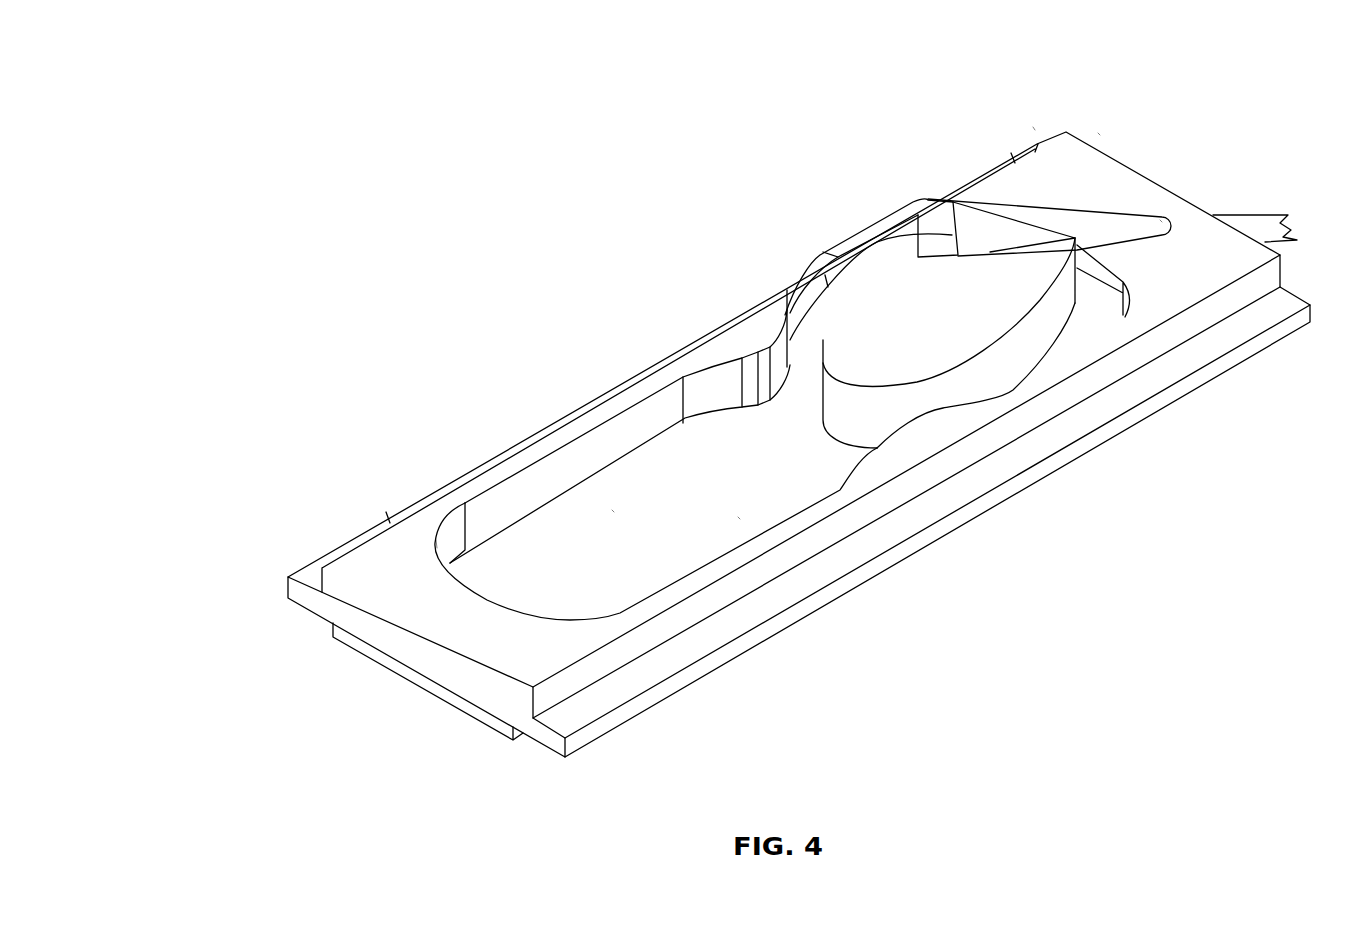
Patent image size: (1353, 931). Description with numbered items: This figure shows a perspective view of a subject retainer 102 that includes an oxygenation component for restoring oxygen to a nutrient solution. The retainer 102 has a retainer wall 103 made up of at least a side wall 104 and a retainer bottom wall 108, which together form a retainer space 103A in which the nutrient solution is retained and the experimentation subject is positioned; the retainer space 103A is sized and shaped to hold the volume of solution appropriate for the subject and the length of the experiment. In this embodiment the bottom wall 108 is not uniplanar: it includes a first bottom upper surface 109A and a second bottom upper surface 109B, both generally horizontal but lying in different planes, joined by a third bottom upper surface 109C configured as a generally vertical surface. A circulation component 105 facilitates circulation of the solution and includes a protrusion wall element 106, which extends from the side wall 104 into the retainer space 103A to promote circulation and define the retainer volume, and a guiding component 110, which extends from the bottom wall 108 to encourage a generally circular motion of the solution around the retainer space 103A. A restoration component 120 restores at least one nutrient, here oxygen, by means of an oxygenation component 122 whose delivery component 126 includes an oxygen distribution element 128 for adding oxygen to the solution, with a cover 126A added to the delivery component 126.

The retainer 102 is at (287, 485).
The retainer wall 103 is at (723, 197).
The retainer space 103A is at (738, 517).
The side wall 104 is at (598, 390).
The circulation component 105 is at (833, 203).
The protrusion wall element 106 is at (737, 345).
The retainer bottom wall 108 is at (542, 553).
The first bottom upper surface 109A is at (1098, 295).
The second bottom upper surface 109B is at (613, 510).
The third bottom upper surface 109C is at (805, 360).
The guiding component 110 is at (948, 347).
The restoration component 120 is at (1033, 127).
The oxygenation component 122 is at (1098, 133).
The delivery component 126 is at (957, 158).
The cover 126A is at (1095, 227).
The oxygen distribution element 128 is at (1243, 207).